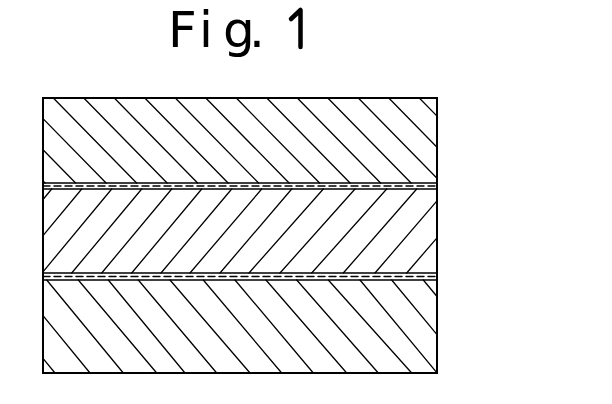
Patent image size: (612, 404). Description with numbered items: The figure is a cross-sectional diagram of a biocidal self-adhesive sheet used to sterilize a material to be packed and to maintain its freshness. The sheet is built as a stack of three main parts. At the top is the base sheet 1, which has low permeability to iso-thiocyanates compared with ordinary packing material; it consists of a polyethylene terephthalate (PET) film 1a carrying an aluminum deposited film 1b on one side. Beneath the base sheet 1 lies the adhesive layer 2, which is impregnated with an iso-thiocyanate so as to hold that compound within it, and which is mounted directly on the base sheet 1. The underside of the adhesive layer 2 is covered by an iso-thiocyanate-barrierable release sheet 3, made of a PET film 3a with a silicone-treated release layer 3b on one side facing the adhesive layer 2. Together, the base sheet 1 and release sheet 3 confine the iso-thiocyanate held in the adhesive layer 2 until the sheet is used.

The base sheet 1 is at (301, 141).
The polyethylene terephthalate (PET) film 1a is at (432, 135).
The aluminum deposited film 1b is at (436, 185).
The adhesive layer 2 is at (437, 228).
The release sheet 3 is at (299, 323).
The PET film 3a is at (437, 338).
The silicone-treated release layer 3b is at (437, 273).